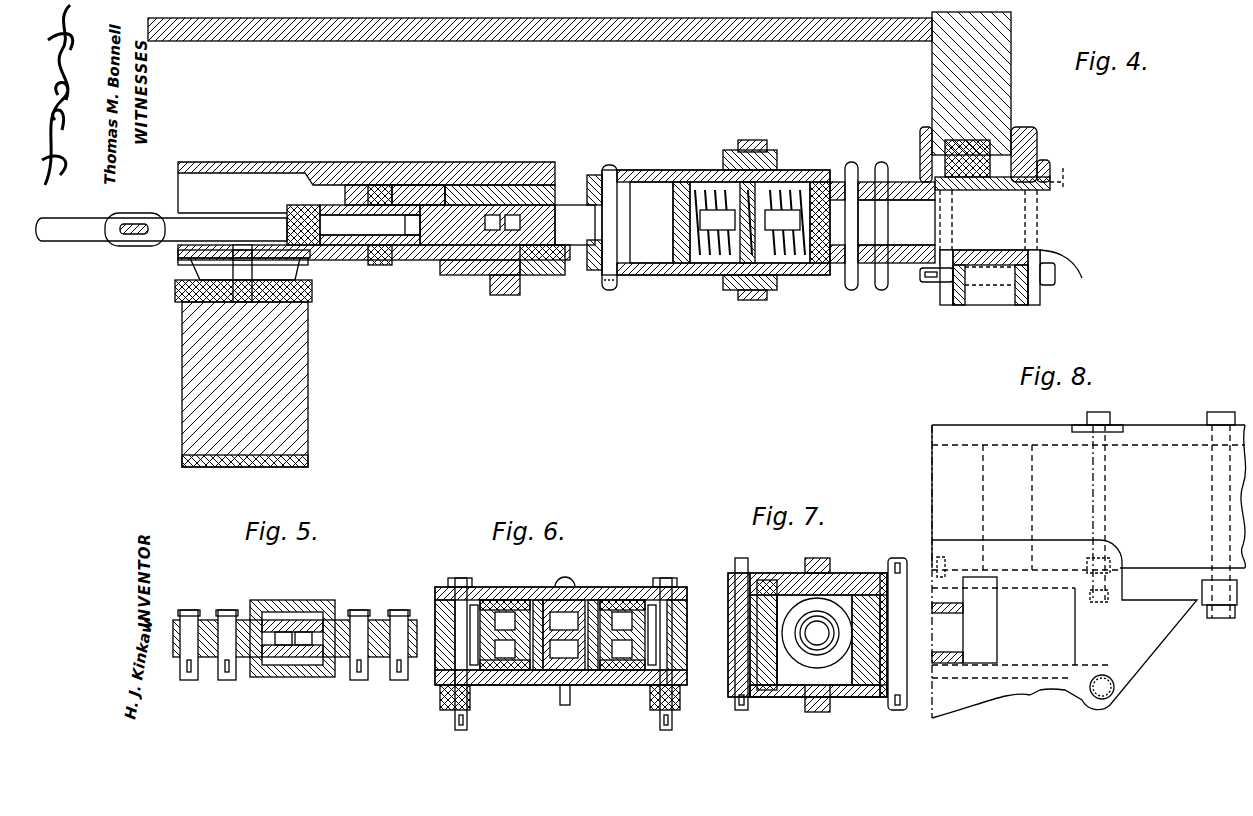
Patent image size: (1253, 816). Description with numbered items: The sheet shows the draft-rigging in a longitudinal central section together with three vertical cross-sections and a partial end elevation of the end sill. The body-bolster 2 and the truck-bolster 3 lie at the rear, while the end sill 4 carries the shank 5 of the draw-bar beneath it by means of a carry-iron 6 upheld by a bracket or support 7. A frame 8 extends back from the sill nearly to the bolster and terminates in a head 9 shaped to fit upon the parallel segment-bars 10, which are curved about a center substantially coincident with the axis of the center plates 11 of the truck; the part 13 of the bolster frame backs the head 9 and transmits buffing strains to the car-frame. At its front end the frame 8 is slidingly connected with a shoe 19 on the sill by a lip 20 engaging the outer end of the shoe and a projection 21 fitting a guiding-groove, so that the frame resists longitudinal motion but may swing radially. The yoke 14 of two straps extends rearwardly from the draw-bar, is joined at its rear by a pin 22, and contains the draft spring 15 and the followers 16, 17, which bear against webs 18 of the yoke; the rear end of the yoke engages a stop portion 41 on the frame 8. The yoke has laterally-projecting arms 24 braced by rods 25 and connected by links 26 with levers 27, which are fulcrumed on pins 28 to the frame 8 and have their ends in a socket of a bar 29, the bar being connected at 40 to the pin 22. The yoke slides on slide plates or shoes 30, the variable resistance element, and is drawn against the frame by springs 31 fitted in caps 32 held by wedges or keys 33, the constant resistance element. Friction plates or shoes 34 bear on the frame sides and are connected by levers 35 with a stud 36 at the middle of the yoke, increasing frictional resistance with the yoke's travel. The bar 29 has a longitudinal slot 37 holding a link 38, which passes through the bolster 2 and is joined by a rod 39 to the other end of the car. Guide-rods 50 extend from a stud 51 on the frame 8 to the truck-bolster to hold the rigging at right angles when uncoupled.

In FIG. 4, the body-bolster 2 is at (238, 162).
In FIG. 4, the truck-bolster 3 is at (245, 384).
In FIG. 4, the end sill 4 is at (995, 92).
In FIG. 8, the end sill 4 is at (1089, 565).
In FIG. 4, the shank of draw-bar 5 is at (896, 222).
In FIG. 4, the carry-iron 6 is at (998, 268).
In FIG. 8, the carry-iron 6 is at (1021, 684).
In FIG. 4, the bracket or support 7 is at (945, 280).
In FIG. 8, the bracket or support 7 is at (1064, 629).
In FIG. 4, the frame 8 is at (1063, 185).
In FIG. 5, the frame 8 is at (293, 600).
In FIG. 6, the frame 8 is at (490, 685).
In FIG. 7, the frame 8 is at (760, 697).
In FIG. 4, the head 9 is at (380, 185).
In FIG. 4, the segment-bars 10 is at (418, 185).
In FIG. 4, the center plates 11 is at (190, 275).
In FIG. 4, the part of frame 13 is at (345, 185).
In FIG. 4, the yoke 14 is at (672, 170).
In FIG. 7, the yoke 14 is at (780, 573).
In FIG. 4, the draft spring 15 is at (700, 270).
In FIG. 7, the draft spring 15 is at (830, 655).
In FIG. 4, the follower 16 is at (678, 270).
In FIG. 7, the follower 16 is at (887, 630).
In FIG. 4, the follower 17 is at (808, 270).
In FIG. 4, the webs 18 is at (826, 292).
In FIG. 4, the shoe 19 is at (1037, 135).
In FIG. 8, the shoe 19 is at (1057, 555).
In FIG. 4, the lip 20 is at (1050, 165).
In FIG. 8, the lip 20 is at (985, 582).
In FIG. 4, the projection 21 is at (920, 150).
In FIG. 8, the projection 21 is at (945, 580).
In FIG. 4, the pin 22 is at (610, 285).
In FIG. 6, the pin 22 is at (565, 705).
In FIG. 6, the arms 24 is at (467, 595).
In FIG. 7, the arms 24 is at (730, 695).
In FIG. 6, the rods 25 is at (687, 620).
In FIG. 7, the rods 25 is at (730, 620).
In FIG. 5, the links 26 is at (180, 615).
In FIG. 6, the links 26 is at (440, 590).
In FIG. 7, the links 26 is at (730, 640).
In FIG. 4, the levers 27 is at (470, 275).
In FIG. 5, the levers 27 is at (283, 645).
In FIG. 5, the pins 28 is at (226, 612).
In FIG. 4, the bar 29 is at (475, 195).
In FIG. 5, the bar 29 is at (312, 655).
In FIG. 6, the bar 29 is at (564, 635).
In FIG. 6, the slide plates or shoes 30 is at (510, 600).
In FIG. 6, the springs 31 is at (452, 715).
In FIG. 6, the caps 32 is at (442, 712).
In FIG. 6, the wedges or keys 33 is at (466, 715).
In FIG. 6, the friction plates or shoes 34 is at (687, 605).
In FIG. 7, the friction plates or shoes 34 is at (735, 605).
In FIG. 4, the levers 35 is at (775, 160).
In FIG. 7, the levers 35 is at (845, 573).
In FIG. 4, the stud 36 is at (752, 140).
In FIG. 7, the stud 36 is at (817, 558).
In FIG. 4, the longitudinal slot 37 is at (353, 225).
In FIG. 4, the link 38 is at (161, 229).
In FIG. 4, the rod 39 is at (65, 235).
In FIG. 4, the connection 40 is at (575, 225).
In FIG. 4, the stop portion 41 is at (570, 170).
In FIG. 4, the guide-rods 50 is at (320, 266).
In FIG. 4, the stud 51 is at (505, 295).